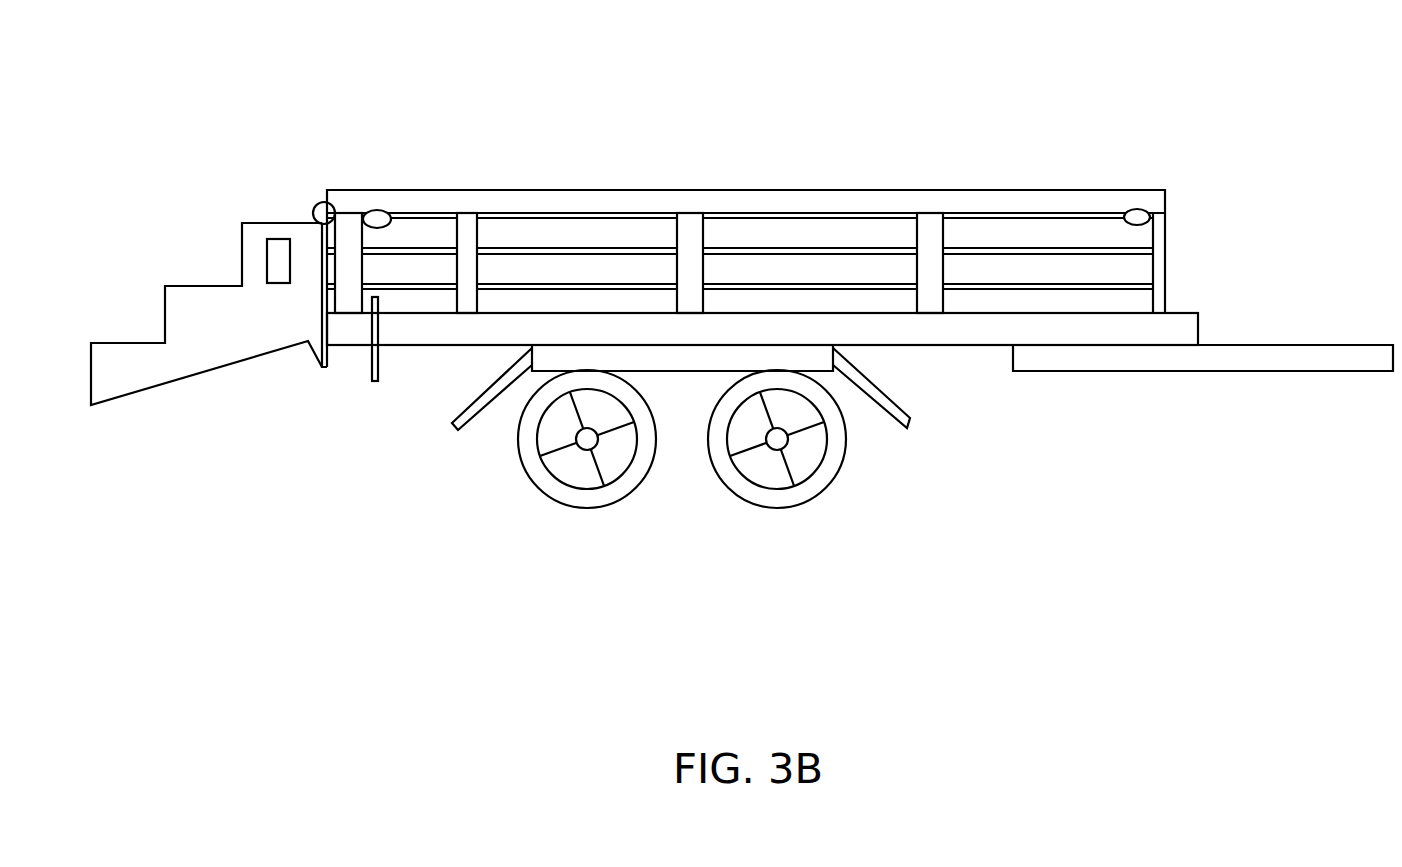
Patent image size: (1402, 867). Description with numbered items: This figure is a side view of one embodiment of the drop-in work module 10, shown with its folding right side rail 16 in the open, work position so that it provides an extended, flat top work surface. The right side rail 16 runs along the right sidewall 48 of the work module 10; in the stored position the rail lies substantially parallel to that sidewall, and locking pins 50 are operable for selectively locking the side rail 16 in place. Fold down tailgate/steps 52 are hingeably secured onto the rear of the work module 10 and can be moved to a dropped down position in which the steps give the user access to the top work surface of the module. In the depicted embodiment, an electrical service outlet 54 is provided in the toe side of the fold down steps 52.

The drop-in work module 10 is at (1095, 115).
The right side rail 16 is at (835, 198).
The right sidewall 48 is at (1137, 265).
The locking pins 50 is at (377, 217).
The fold down tailgate/steps 52 is at (195, 298).
The electrical service outlet 54 is at (279, 255).